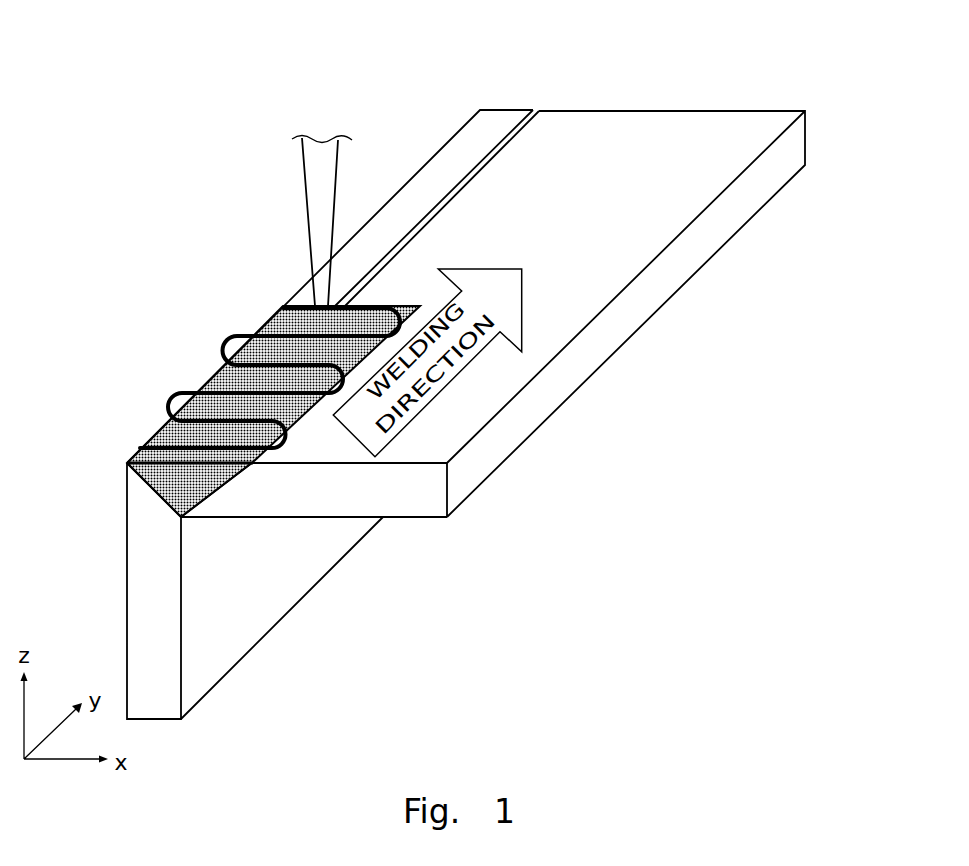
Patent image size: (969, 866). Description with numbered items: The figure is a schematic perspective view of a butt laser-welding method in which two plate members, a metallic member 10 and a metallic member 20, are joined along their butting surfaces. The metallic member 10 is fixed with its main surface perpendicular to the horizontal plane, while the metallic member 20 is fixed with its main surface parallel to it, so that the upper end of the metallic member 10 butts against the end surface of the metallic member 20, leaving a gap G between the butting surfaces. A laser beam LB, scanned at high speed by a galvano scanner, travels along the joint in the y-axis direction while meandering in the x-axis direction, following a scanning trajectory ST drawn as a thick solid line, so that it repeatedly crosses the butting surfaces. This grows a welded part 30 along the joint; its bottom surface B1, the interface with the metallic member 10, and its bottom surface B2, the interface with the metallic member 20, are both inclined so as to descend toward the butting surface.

The metallic member 10 is at (502, 120).
The metallic member 20 is at (660, 120).
The welded part 30 is at (222, 365).
The gap G is at (539, 103).
The laser beam LB is at (312, 168).
The scanning trajectory ST is at (168, 412).
The bottom surface B1 is at (143, 487).
The bottom surface B2 is at (232, 494).